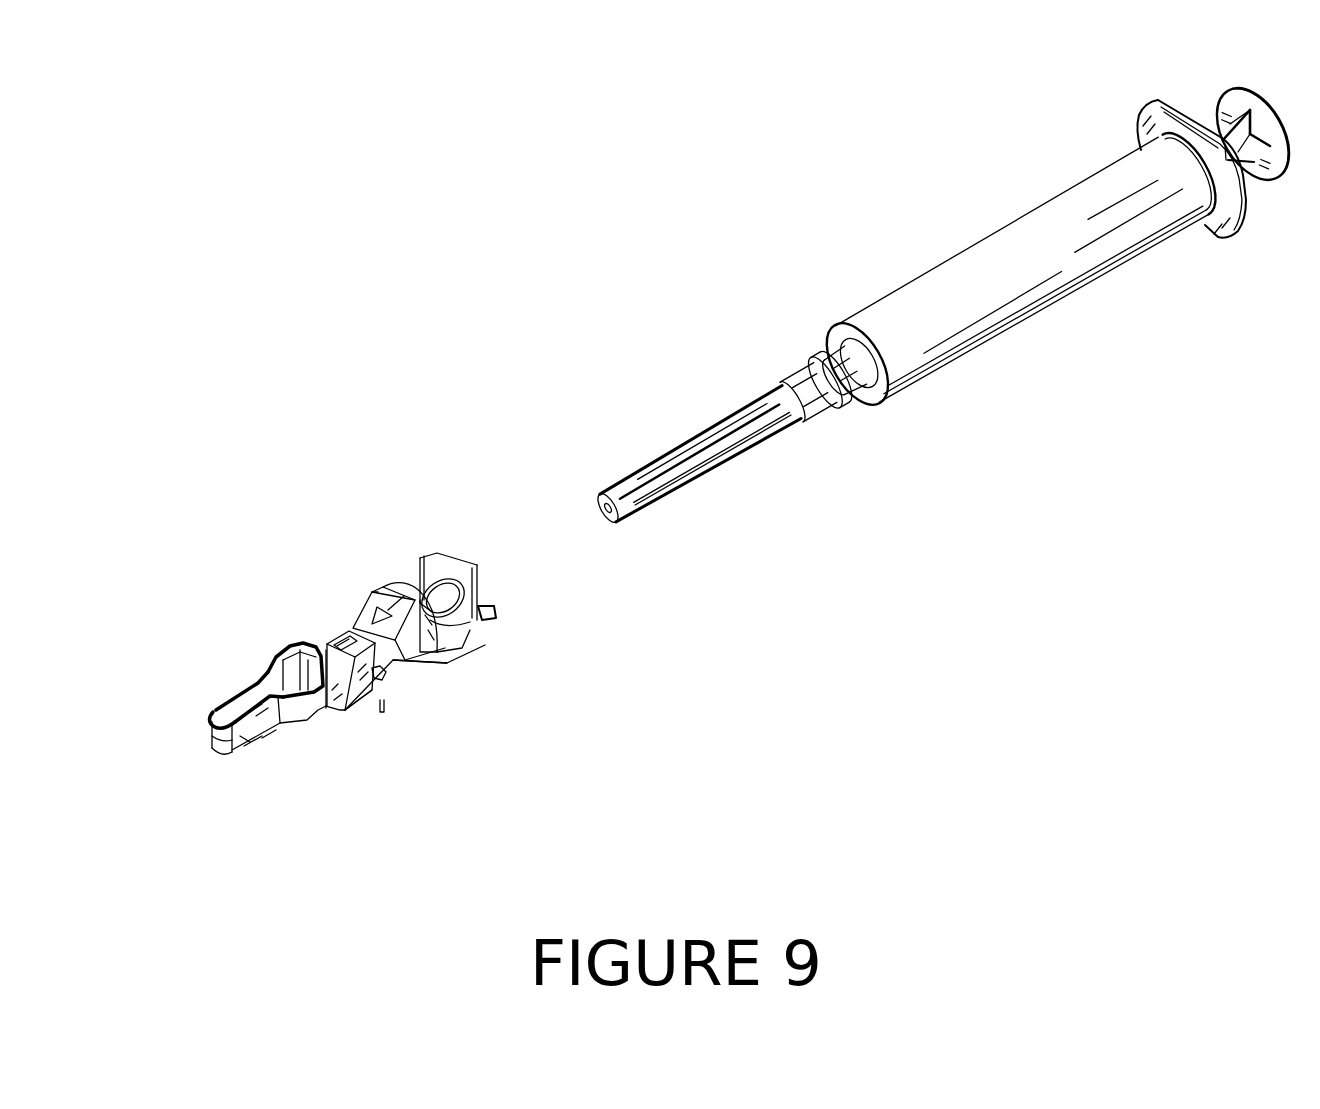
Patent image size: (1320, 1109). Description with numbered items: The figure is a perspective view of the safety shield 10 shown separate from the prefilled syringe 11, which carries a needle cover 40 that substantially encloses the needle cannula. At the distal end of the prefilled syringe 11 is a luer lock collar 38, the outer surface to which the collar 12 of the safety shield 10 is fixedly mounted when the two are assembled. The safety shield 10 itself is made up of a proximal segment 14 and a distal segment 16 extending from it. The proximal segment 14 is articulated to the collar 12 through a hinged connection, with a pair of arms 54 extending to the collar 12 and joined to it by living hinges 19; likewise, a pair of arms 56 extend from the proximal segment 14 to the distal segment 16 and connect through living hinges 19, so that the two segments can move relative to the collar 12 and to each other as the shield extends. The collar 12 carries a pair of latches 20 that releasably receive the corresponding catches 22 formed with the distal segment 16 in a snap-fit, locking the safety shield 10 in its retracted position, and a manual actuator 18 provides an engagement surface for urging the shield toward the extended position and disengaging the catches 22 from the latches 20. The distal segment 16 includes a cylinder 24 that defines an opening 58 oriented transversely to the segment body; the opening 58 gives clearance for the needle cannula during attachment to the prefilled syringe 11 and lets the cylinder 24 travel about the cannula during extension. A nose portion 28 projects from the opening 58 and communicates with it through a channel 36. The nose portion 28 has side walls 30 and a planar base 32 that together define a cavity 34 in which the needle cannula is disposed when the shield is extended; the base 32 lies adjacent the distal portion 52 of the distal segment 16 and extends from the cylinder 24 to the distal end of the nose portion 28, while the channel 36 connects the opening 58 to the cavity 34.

The safety shield 10 is at (275, 608).
The prefilled syringe 11 is at (1040, 196).
The collar 12 is at (398, 583).
The proximal segment 14 is at (478, 657).
The distal segment 16 is at (345, 630).
The manual actuator 18 is at (374, 600).
The living hinges 19 is at (446, 664).
The latches 20 is at (424, 565).
The catches 22 is at (394, 694).
The cylinder 24 is at (340, 710).
The nose portion 28 is at (222, 752).
The side walls 30 is at (290, 722).
The base 32 is at (270, 748).
The cavity 34 is at (252, 690).
The channel 36 is at (226, 712).
The luer lock collar 38 is at (866, 408).
The needle cover 40 is at (690, 436).
The distal portion 52 is at (218, 728).
The arms 54 is at (378, 590).
The arms 56 is at (380, 673).
The opening 58 is at (266, 664).